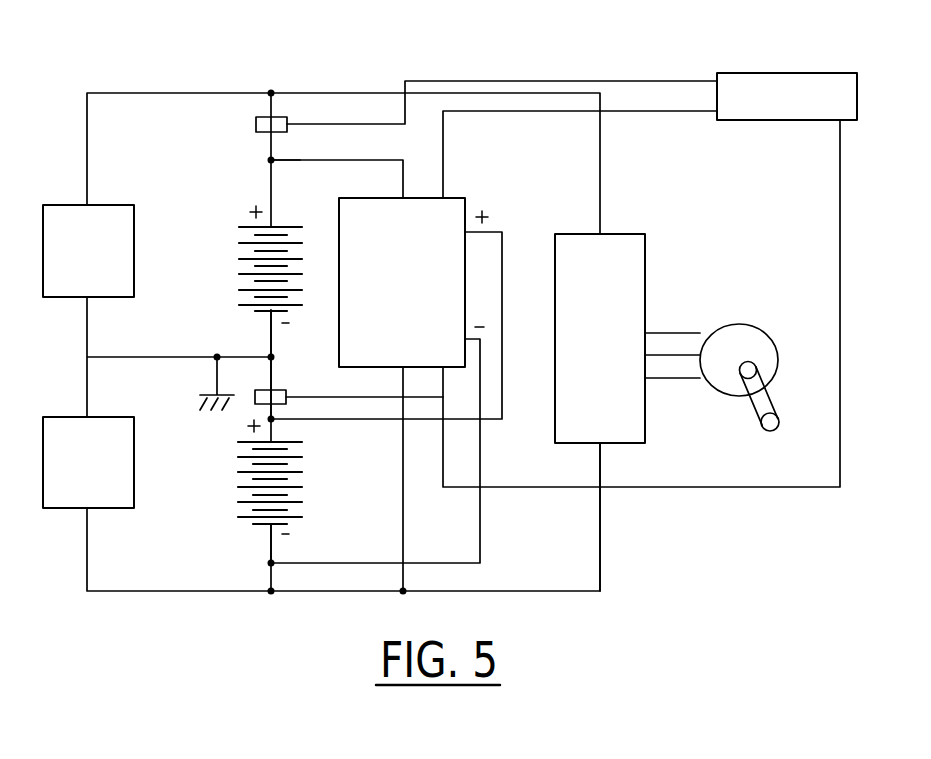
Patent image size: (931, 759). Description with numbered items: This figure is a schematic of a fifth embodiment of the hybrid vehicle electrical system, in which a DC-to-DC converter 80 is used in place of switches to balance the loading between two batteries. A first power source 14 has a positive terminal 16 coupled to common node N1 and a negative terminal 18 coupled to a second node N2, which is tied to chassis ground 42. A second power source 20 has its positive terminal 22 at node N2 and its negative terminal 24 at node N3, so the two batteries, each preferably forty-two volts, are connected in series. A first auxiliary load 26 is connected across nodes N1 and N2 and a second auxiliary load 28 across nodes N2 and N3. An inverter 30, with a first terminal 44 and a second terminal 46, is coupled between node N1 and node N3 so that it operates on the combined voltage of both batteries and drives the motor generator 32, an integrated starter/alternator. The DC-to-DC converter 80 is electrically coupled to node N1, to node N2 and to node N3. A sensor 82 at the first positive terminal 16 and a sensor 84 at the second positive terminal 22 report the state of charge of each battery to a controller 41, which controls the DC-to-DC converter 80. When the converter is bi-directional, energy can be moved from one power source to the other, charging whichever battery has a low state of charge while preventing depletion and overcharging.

The first power source 14 is at (243, 240).
The positive terminal 16 is at (271, 174).
The negative terminal 18 is at (271, 336).
The second power source 20 is at (243, 480).
The positive terminal 22 is at (266, 373).
The negative terminal 24 is at (268, 543).
The first auxiliary load 26 is at (122, 203).
The second auxiliary load 28 is at (118, 417).
The inverter 30 is at (645, 250).
The motor generator 32 is at (778, 359).
The controller 41 is at (773, 71).
The chassis ground 42 is at (217, 381).
The first terminal 44 is at (627, 234).
The second terminal 46 is at (600, 527).
The DC-to-DC converter 80 is at (458, 197).
The sensor 82 is at (256, 124).
The sensor 84 is at (255, 399).
The common node N1 is at (271, 93).
The second node N2 is at (271, 357).
The node N3 is at (271, 591).